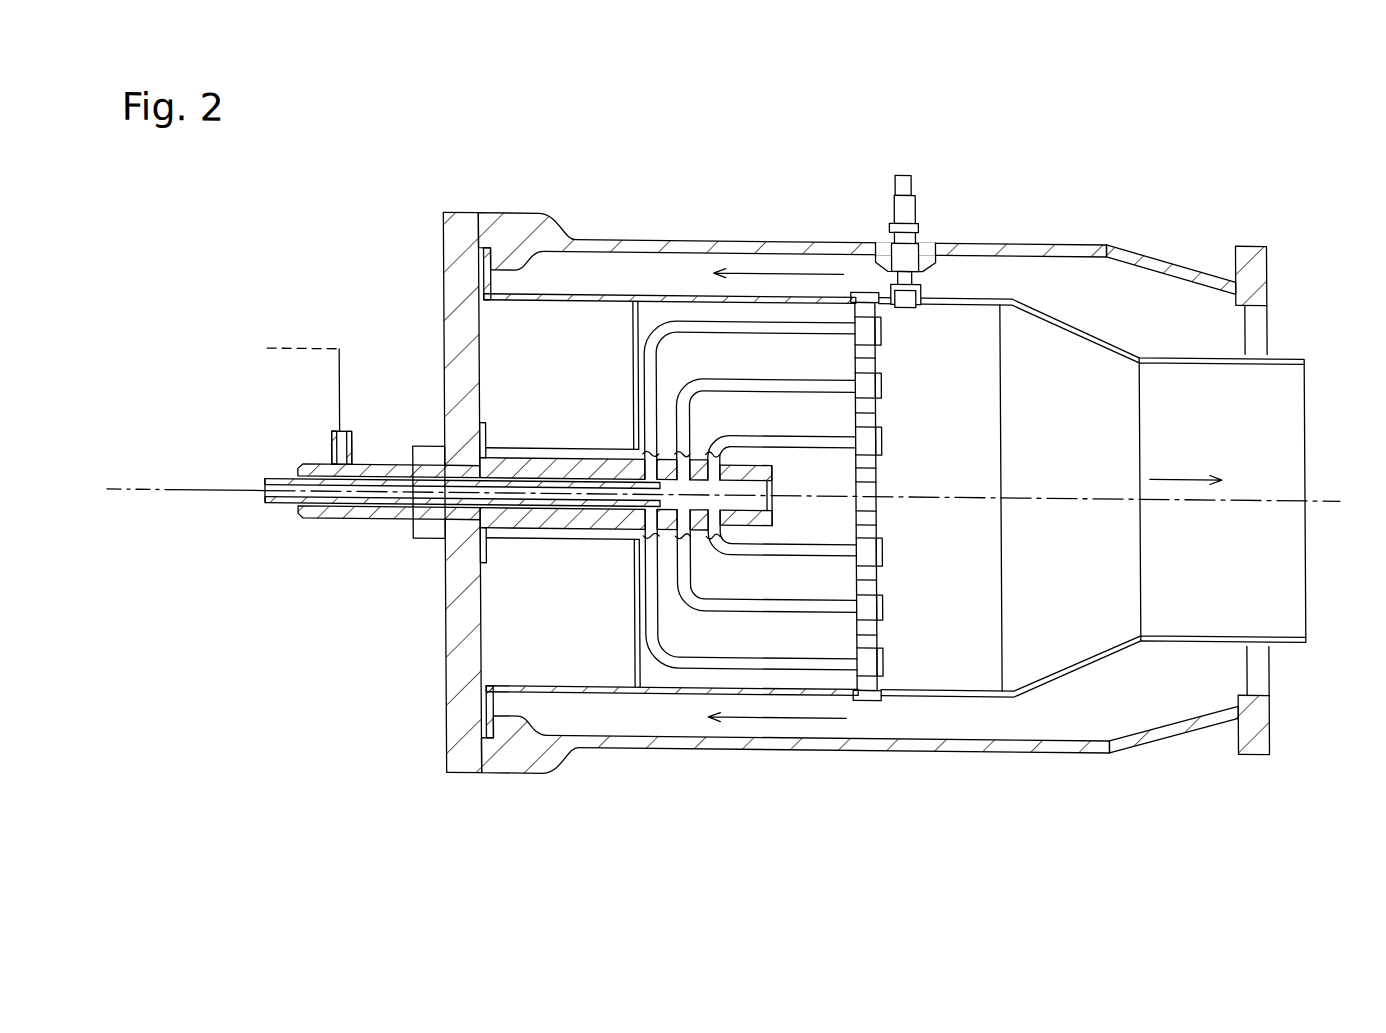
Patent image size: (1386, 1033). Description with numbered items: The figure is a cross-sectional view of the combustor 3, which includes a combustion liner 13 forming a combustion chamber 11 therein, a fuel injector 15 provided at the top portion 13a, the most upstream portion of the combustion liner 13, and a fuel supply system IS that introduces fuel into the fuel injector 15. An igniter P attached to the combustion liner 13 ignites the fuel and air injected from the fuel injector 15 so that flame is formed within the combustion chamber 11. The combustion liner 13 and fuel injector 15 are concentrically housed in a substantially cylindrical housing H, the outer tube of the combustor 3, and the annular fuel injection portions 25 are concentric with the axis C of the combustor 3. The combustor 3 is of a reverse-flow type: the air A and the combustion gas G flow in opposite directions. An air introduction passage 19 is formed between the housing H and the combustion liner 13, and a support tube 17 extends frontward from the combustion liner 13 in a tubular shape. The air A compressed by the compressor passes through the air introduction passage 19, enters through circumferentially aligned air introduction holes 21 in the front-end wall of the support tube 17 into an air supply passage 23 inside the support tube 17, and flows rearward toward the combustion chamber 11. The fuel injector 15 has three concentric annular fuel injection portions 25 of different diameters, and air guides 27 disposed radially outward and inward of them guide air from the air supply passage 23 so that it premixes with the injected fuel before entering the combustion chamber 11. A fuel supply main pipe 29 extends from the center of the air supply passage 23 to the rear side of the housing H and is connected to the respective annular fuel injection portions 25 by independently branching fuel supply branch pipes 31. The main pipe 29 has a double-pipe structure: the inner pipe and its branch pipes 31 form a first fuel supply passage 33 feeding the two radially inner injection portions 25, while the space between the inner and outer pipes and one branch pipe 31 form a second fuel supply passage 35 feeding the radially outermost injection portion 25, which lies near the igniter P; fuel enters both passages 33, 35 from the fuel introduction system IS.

The combustor 3 is at (1060, 126).
The combustion chamber 11 is at (1060, 453).
The combustion liner 13 is at (1051, 304).
The top portion of the combustion liner 13a is at (879, 700).
The fuel injector 15 is at (886, 628).
The support tube 17 is at (694, 301).
The air introduction passage 19 is at (1141, 317).
The air introduction holes 21 is at (621, 299).
The air supply passage 23 is at (694, 632).
The annular fuel injection portions 25 is at (884, 668).
The air guides 27 is at (879, 640).
The fuel supply main pipe 29 is at (518, 532).
The fuel supply branch pipes 31 is at (677, 339).
The first fuel supply passage 33 is at (393, 508).
The second fuel supply passage 35 is at (385, 469).
The air A is at (781, 275).
The axis of the combustor C is at (1237, 498).
The combustion gas G is at (1165, 477).
The housing H is at (651, 302).
The fuel supply system IS is at (341, 397).
The igniter P is at (915, 209).